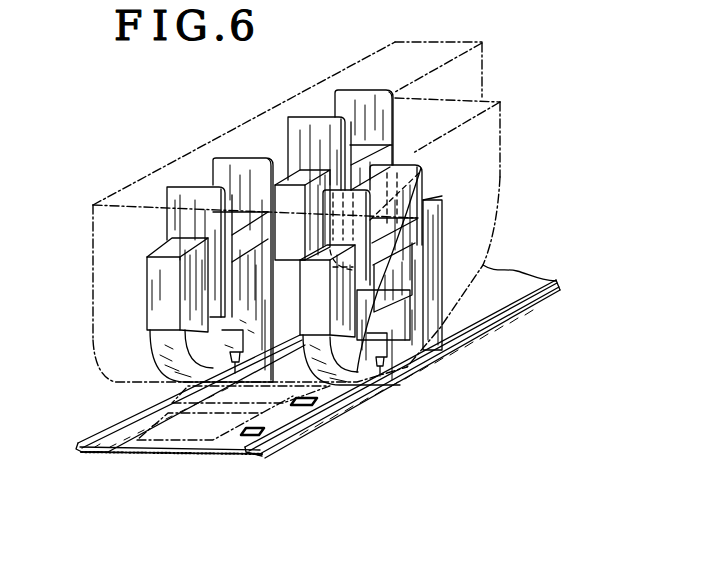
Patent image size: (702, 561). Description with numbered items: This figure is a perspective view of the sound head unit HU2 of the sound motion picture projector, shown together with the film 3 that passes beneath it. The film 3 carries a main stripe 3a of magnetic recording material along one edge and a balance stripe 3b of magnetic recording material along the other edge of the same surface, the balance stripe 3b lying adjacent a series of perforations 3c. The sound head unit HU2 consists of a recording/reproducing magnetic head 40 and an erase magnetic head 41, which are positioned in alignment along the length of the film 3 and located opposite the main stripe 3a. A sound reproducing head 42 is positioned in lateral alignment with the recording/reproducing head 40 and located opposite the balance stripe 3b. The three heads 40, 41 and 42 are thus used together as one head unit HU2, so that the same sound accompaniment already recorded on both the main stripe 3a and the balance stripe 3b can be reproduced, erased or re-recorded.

The sound head unit HU2 is at (457, 30).
The film strip 3 is at (137, 452).
The main stripe 3a is at (117, 435).
The balance stripe 3b is at (275, 440).
The perforations 3c is at (317, 402).
The recording/reproducing magnetic head 40 is at (228, 163).
The erase magnetic head 41 is at (353, 95).
The sound reproducing head 42 is at (440, 230).